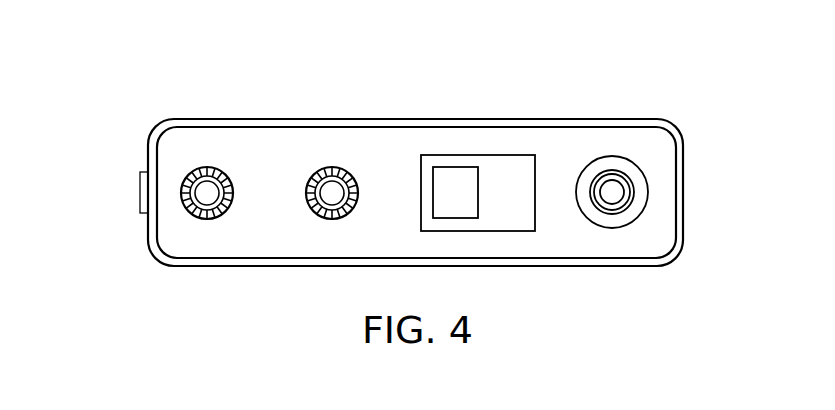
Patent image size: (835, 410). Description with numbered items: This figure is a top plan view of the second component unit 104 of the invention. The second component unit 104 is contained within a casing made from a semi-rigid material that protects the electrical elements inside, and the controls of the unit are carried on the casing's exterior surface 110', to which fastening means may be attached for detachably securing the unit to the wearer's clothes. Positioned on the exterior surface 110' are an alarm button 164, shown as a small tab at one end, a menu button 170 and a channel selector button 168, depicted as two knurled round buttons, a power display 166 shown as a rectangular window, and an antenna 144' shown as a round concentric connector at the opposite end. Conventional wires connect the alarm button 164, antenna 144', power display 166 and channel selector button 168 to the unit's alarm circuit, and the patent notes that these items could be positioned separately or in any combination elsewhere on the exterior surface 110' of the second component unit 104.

The second component unit 104 is at (695, 82).
The exterior surface 110' is at (408, 225).
The antenna 144' is at (676, 185).
The alarm button 164 is at (140, 193).
The power display 166 is at (485, 165).
The channel selector button 168 is at (329, 167).
The menu button 170 is at (205, 167).